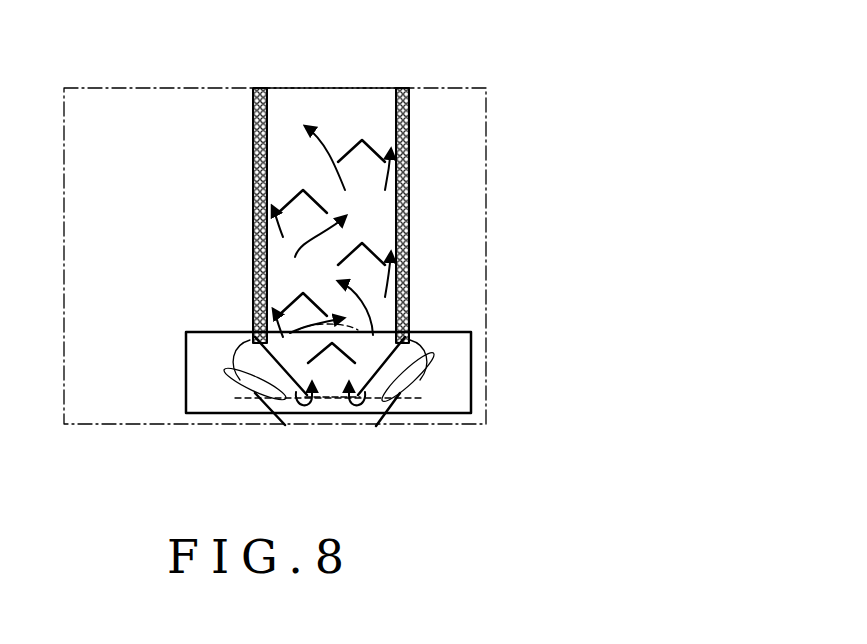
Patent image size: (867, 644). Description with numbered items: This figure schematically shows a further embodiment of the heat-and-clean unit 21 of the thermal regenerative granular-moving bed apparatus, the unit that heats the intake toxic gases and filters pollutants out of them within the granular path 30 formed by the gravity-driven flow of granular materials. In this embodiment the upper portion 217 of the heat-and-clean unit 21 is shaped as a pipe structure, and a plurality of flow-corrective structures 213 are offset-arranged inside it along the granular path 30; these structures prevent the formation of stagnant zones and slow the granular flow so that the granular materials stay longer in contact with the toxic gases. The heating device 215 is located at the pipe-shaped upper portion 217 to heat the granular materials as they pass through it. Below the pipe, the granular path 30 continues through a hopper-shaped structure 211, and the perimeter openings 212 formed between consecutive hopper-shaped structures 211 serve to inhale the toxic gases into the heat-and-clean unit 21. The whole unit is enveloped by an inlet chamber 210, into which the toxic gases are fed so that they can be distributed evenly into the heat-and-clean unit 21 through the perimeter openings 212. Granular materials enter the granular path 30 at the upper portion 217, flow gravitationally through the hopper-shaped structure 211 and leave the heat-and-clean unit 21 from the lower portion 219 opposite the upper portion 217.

The heat-and-clean unit 21 is at (126, 137).
The granular path 30 is at (351, 135).
The inlet chamber 210 is at (186, 336).
The hopper-shaped structure 211 is at (253, 342).
The perimeter opening 212 is at (405, 365).
The flow-corrective structure 213 is at (324, 309).
The heating device 215 is at (255, 158).
The upper portion 217 is at (333, 95).
The lower portion 219 is at (343, 418).